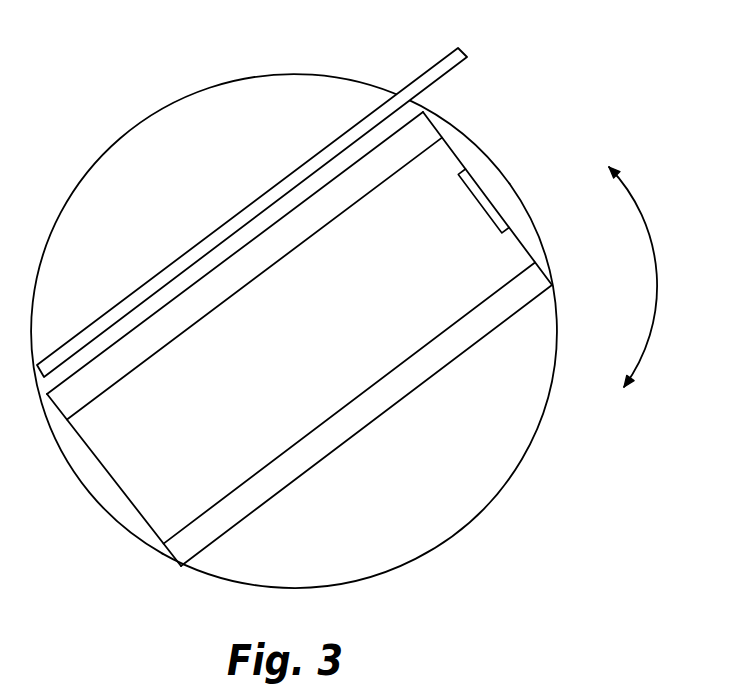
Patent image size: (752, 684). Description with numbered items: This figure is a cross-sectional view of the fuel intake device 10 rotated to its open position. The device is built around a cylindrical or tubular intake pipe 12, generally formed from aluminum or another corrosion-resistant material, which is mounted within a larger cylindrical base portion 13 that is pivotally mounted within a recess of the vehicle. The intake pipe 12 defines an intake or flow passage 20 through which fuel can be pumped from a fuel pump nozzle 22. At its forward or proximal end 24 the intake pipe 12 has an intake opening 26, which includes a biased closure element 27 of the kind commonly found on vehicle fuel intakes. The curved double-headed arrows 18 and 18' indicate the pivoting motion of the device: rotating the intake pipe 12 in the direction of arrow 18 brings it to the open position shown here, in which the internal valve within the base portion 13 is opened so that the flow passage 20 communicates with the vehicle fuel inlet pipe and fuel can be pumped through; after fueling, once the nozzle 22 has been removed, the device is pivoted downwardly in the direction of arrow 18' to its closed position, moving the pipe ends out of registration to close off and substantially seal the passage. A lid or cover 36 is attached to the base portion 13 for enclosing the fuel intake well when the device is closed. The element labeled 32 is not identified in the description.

The fuel intake device 10 is at (513, 527).
The intake pipe 12 is at (165, 504).
The base portion 13 is at (227, 572).
The arrow 18 is at (644, 271).
The arrow 18' is at (661, 376).
The flow passage 20 is at (291, 364).
The fuel pump nozzle 22 is at (544, 675).
The proximal end 24 is at (459, 130).
The intake opening 26 is at (533, 258).
The biased closure element 27 is at (483, 205).
The leading plate edge 32 is at (115, 478).
The cover 36 is at (431, 68).